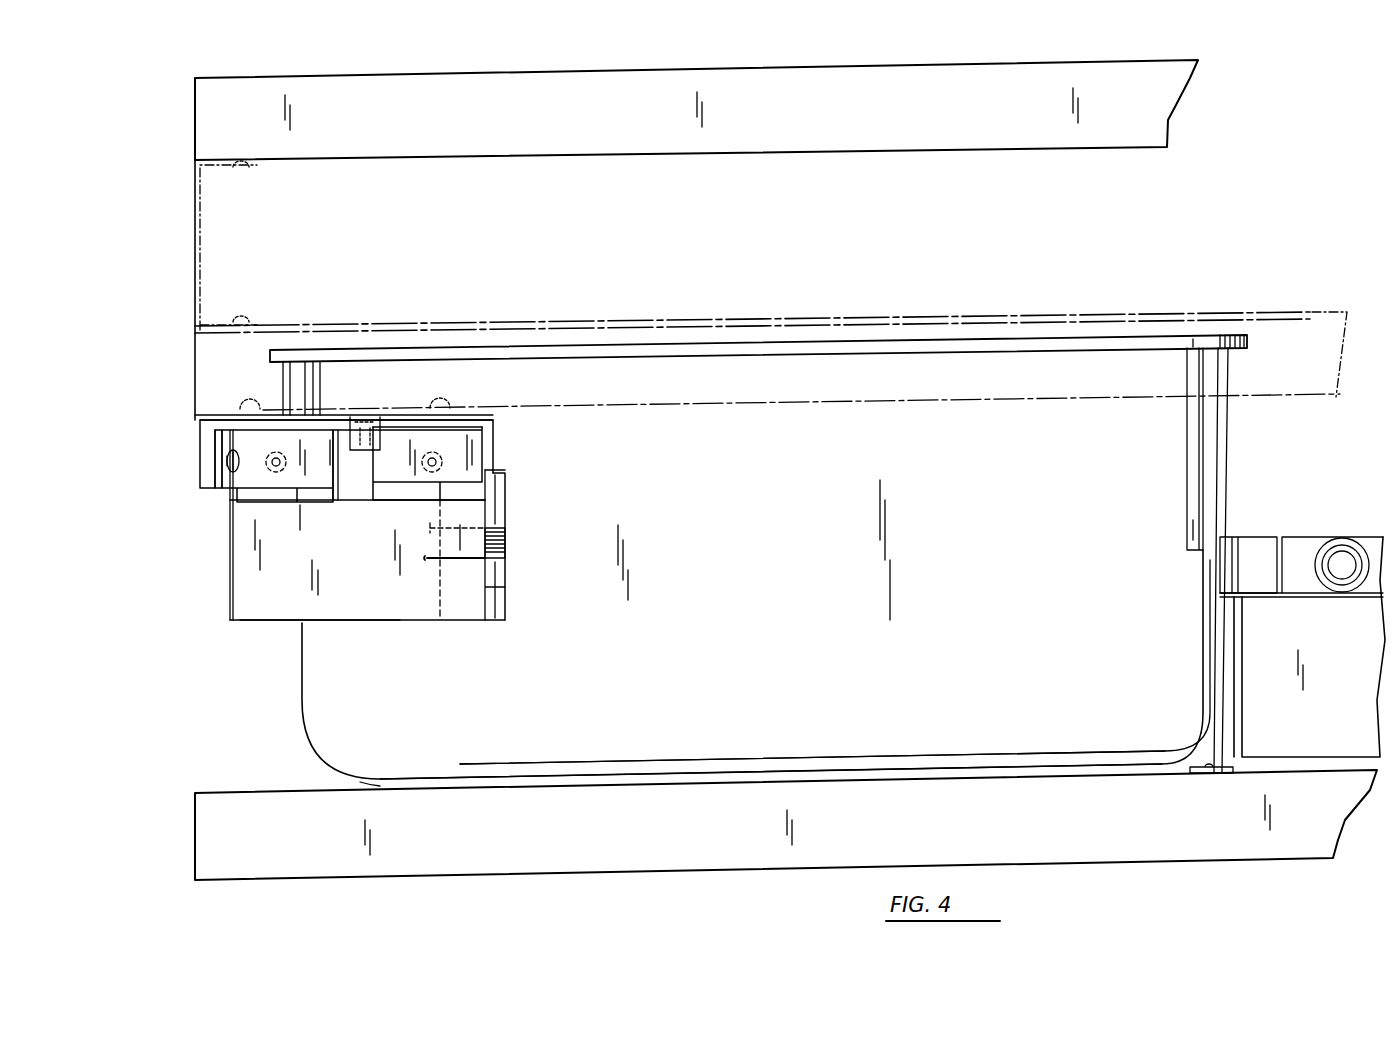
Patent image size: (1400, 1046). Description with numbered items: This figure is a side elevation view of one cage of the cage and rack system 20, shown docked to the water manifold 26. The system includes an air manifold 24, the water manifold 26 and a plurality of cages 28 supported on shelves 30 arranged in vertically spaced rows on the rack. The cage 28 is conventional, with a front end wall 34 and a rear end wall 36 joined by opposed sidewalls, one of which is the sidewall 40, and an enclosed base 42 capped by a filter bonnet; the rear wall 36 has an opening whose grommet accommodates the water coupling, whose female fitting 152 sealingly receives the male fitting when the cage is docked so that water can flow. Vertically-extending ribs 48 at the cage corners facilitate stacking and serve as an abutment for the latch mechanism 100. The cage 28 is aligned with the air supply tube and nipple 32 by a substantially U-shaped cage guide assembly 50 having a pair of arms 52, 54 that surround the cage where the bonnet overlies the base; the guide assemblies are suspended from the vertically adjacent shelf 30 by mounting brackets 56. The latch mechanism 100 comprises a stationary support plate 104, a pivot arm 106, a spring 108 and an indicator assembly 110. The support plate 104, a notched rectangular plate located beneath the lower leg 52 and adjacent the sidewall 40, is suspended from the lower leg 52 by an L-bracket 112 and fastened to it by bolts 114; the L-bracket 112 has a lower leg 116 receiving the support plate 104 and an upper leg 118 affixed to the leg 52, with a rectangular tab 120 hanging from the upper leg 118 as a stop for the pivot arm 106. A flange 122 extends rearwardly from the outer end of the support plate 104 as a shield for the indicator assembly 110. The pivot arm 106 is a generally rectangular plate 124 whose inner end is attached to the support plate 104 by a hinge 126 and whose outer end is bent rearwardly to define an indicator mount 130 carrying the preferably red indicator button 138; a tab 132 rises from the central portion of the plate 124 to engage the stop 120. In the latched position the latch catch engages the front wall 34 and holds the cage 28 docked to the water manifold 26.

The cage and rack system 20 is at (1268, 148).
The air manifold 24 is at (1337, 731).
The water manifold 26 is at (1362, 540).
The cage 28 is at (880, 755).
The shelf 30 is at (1080, 110).
The air supply tube and nipple 32 is at (1302, 538).
The front end wall 34 is at (302, 690).
The rear end wall 36 is at (1228, 438).
The sidewall 40 is at (1032, 536).
The enclosed base 42 is at (352, 782).
The vertically-extending ribs 48 is at (290, 380).
The cage guide assembly 50 is at (1272, 304).
The lower leg (arm) 52 is at (1305, 400).
The arm 54 is at (1334, 308).
The mounting bracket 56 is at (195, 233).
The latch mechanism 100 is at (530, 487).
The stationary support plate 104 is at (475, 450).
The pivot arm 106 is at (400, 615).
The spring 108 is at (508, 548).
The indicator assembly 110 is at (190, 437).
The L-bracket 112 is at (458, 406).
The bolts 114 is at (276, 452).
The lower leg 116 is at (478, 430).
The upper leg 118 is at (492, 420).
The rectangular tab 120 is at (378, 440).
The flange 122 is at (213, 478).
The rectangular plate 124 is at (352, 612).
The hinge 126 is at (508, 575).
The indicator mount 130 is at (230, 492).
The tab 132 is at (338, 435).
The indicator button 138 is at (227, 458).
The female fitting 152 is at (1250, 538).